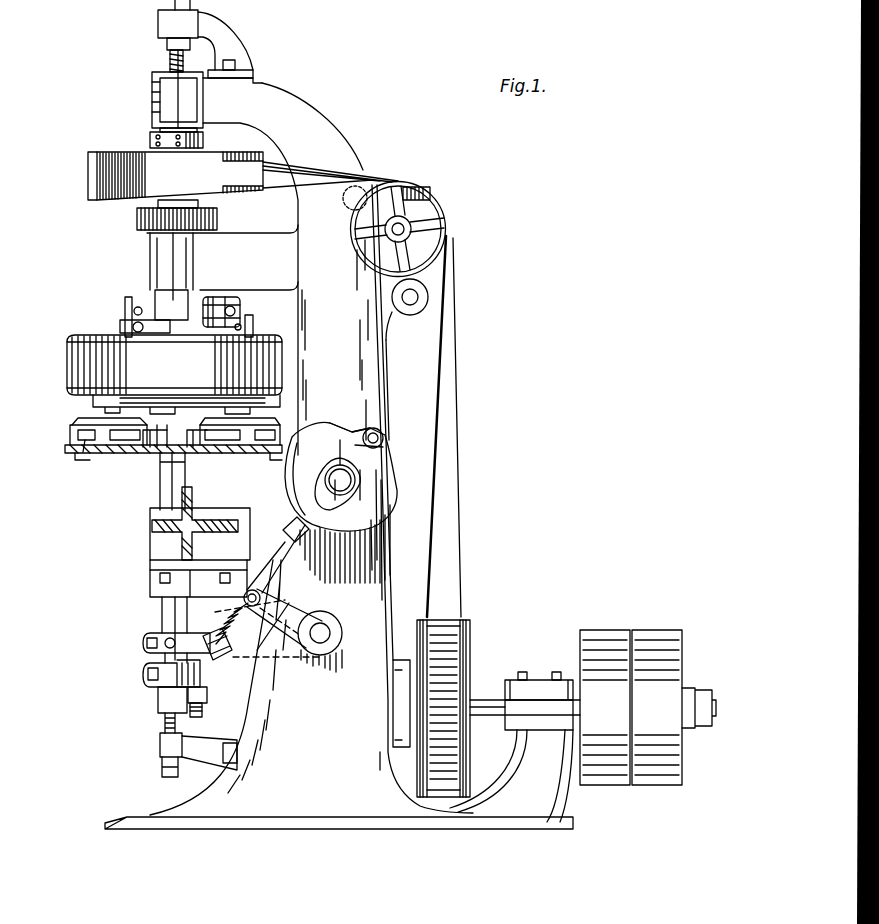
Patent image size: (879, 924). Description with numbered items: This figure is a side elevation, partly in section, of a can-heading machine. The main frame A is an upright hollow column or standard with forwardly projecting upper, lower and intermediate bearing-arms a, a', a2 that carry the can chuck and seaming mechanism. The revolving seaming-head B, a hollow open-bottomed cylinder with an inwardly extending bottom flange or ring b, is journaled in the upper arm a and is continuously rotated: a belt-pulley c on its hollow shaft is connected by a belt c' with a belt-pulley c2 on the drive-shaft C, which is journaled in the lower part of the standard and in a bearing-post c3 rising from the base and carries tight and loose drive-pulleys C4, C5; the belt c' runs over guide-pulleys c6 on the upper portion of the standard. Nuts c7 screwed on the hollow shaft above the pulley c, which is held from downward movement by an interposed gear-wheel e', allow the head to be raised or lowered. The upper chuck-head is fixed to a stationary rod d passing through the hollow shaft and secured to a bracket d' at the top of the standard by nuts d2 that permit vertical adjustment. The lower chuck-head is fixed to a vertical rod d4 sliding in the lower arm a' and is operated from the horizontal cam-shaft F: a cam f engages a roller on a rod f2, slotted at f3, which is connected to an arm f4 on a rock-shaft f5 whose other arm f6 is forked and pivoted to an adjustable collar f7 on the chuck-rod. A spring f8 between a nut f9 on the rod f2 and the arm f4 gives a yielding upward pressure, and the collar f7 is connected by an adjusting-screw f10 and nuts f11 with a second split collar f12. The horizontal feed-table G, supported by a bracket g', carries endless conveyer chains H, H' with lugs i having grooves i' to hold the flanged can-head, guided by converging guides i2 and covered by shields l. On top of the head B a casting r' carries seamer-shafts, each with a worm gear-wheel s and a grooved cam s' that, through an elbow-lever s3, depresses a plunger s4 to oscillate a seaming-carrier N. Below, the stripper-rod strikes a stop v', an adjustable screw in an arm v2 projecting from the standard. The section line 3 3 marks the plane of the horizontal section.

The main frame A is at (339, 456).
The upper bearing-arm a is at (207, 91).
The lower bearing-arm a' is at (210, 552).
The intermediate bearing-arm a2 is at (230, 300).
The annular bottom flange b is at (67, 385).
The revolving head B is at (181, 372).
The seaming carrier N is at (146, 372).
The belt-pulley c is at (184, 185).
The belt c' is at (330, 166).
The belt-pulley c2 is at (470, 633).
The bearing-post c3 is at (511, 776).
The drive-shaft C is at (476, 705).
The tight drive-pulley C4 is at (605, 707).
The loose drive-pulley C5 is at (674, 707).
The guide-pulleys c6 is at (446, 229).
The nuts c7 is at (150, 140).
The stationary vertical rod d is at (155, 61).
The bracket d' is at (208, 39).
The nuts d2 is at (168, 42).
The vertical rod d4 is at (162, 606).
The gear-wheel e' is at (162, 217).
The cam f is at (380, 500).
The rod f2 is at (375, 464).
The slot f3 is at (296, 555).
The arm f4 is at (290, 612).
The rock-shaft f5 is at (322, 632).
The arm f6 is at (258, 651).
The adjustable collar f7 is at (145, 640).
The spring f8 is at (228, 628).
The adjustable collar or nut f9 is at (217, 658).
The adjusting-screw f10 is at (202, 710).
The nuts f11 is at (207, 696).
The second split collar f12 is at (160, 678).
The cam-shaft F is at (340, 481).
The bracket g' is at (170, 523).
The feed-table G is at (92, 452).
The conveyer chain H is at (188, 481).
The conveyer chain H' is at (146, 466).
The lugs i is at (165, 442).
The rabbets or grooves i' is at (172, 412).
The converging guides i2 is at (147, 449).
The plates or shields l is at (290, 432).
The bracket or casting r' is at (145, 324).
The worm gear-wheel s is at (234, 306).
The grooved cam s' is at (193, 296).
The elbow-lever s3 is at (135, 314).
The plunger s4 is at (125, 326).
The stop v' is at (152, 711).
The arm v2 is at (213, 757).
The section line 3 is at (72, 430).